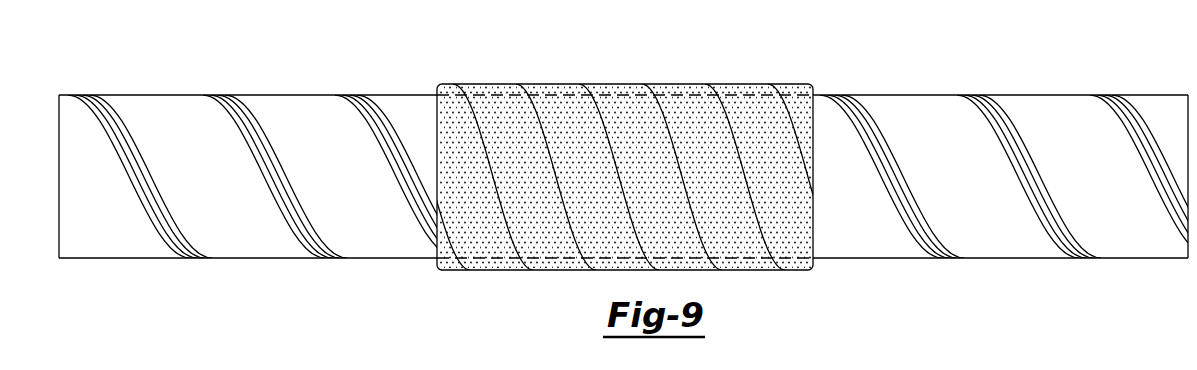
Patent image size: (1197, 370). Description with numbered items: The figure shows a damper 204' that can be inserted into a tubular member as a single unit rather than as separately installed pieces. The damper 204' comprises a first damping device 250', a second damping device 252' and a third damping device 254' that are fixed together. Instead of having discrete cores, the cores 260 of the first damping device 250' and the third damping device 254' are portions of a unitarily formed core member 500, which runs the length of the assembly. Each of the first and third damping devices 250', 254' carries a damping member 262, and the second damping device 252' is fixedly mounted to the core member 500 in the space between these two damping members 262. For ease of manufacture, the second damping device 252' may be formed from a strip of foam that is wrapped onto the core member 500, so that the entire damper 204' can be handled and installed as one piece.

The damper 204' is at (628, 192).
The first damping device 250' is at (273, 139).
The second damping device 252' is at (619, 144).
The third damping device 254' is at (1008, 136).
The core 260 is at (107, 242).
The damping member 262 is at (245, 123).
The core member 500 is at (406, 105).